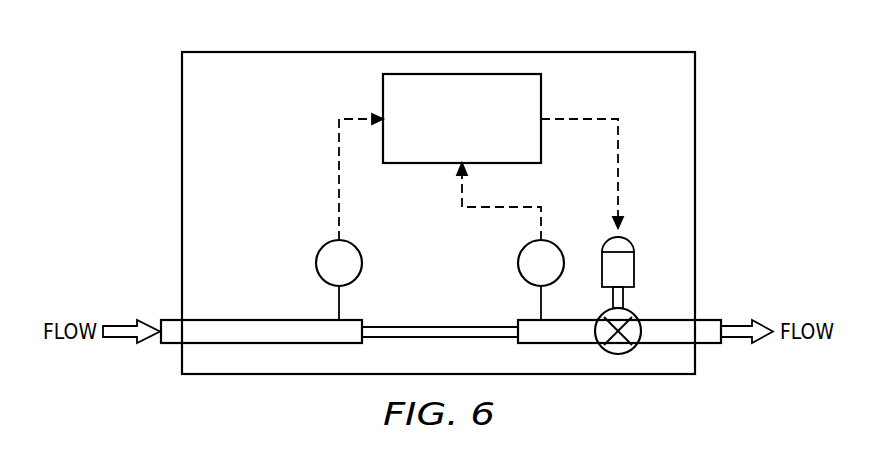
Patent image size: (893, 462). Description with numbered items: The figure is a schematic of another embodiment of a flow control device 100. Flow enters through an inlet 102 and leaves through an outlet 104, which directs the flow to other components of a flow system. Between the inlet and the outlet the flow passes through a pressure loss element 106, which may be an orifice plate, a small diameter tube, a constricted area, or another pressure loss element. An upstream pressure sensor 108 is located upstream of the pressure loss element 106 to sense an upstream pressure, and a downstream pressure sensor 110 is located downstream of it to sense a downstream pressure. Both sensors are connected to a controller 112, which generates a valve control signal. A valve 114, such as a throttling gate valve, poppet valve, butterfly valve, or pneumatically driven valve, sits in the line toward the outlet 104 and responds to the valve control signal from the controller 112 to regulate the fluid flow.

The flow control device 100 is at (280, 109).
The inlet 102 is at (170, 345).
The outlet 104 is at (705, 345).
The pressure loss element 106 is at (430, 323).
The upstream pressure sensor 108 is at (316, 263).
The downstream pressure sensor 110 is at (518, 263).
The controller 112 is at (484, 131).
The valve 114 is at (636, 310).